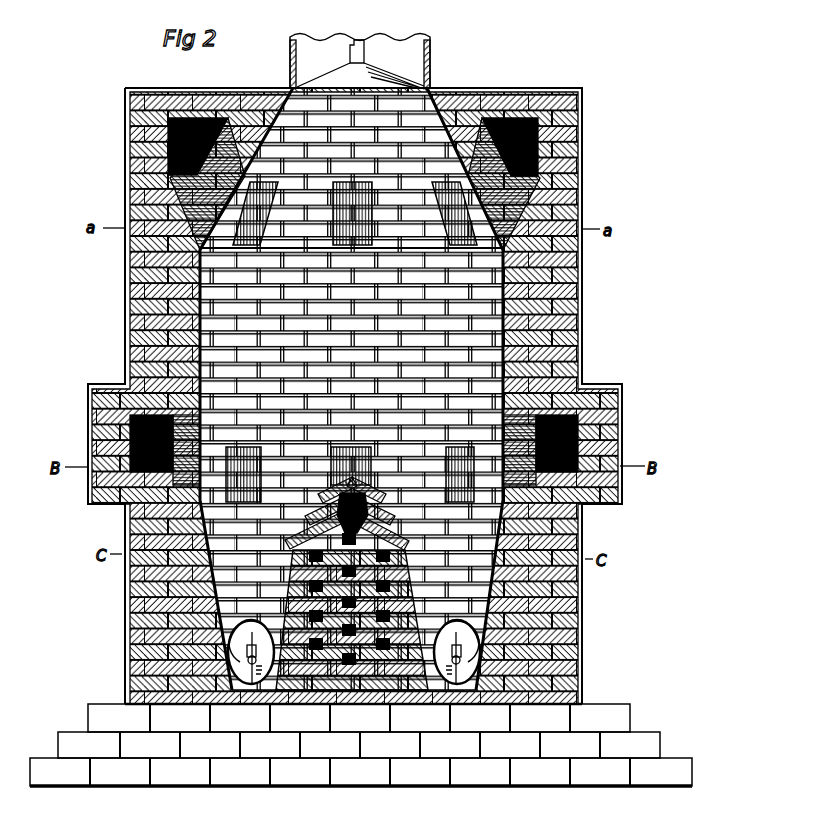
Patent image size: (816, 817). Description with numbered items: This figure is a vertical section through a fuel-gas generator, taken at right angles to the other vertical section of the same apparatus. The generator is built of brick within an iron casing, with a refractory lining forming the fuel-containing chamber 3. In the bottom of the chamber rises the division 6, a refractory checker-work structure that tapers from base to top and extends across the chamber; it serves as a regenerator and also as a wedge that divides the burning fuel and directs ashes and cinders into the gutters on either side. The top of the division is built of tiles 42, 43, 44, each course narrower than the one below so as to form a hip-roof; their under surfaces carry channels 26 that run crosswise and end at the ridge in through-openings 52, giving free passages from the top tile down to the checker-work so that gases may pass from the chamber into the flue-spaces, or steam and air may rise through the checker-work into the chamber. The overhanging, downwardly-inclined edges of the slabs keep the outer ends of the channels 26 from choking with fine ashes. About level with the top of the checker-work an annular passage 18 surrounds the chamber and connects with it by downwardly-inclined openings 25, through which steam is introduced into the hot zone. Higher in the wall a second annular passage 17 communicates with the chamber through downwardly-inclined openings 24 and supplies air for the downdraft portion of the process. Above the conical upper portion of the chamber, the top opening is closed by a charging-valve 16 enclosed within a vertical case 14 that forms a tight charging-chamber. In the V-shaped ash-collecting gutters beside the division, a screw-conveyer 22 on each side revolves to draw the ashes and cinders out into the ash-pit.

The fuel-containing chamber 3 is at (351, 389).
The division 6 is at (408, 586).
The vertical case 14 is at (360, 61).
The charging-valve 16 is at (360, 64).
The annular passage 17 is at (124, 144).
The annular passage 18 is at (88, 436).
The screw-conveyer 22 is at (354, 652).
The downwardly-inclined openings 24 is at (355, 184).
The downwardly-inclined openings 25 is at (354, 458).
The channels 26 is at (347, 516).
The tile 42 is at (355, 529).
The tile 43 is at (358, 509).
The tile 44 is at (372, 494).
The through-openings 52 is at (390, 501).